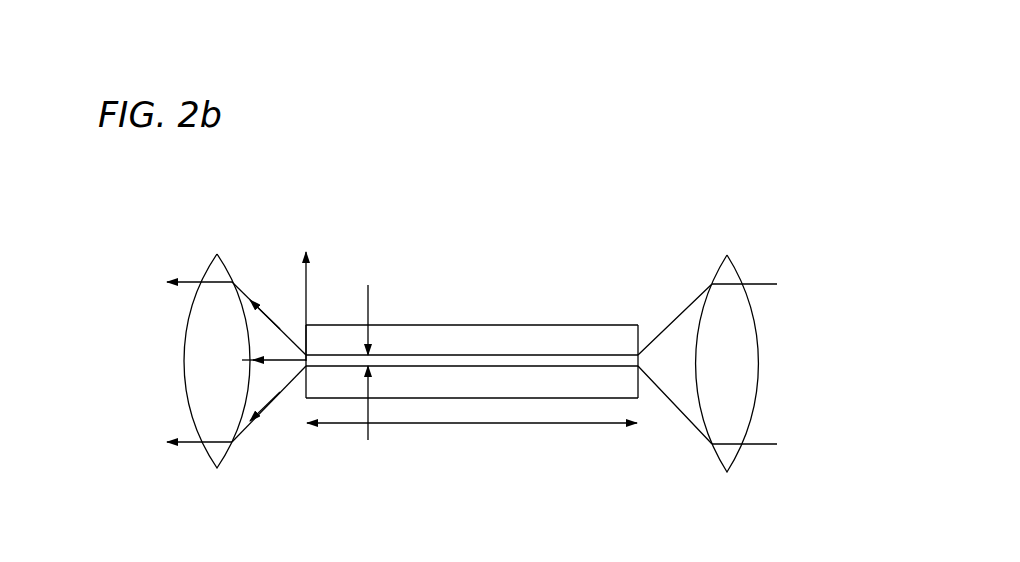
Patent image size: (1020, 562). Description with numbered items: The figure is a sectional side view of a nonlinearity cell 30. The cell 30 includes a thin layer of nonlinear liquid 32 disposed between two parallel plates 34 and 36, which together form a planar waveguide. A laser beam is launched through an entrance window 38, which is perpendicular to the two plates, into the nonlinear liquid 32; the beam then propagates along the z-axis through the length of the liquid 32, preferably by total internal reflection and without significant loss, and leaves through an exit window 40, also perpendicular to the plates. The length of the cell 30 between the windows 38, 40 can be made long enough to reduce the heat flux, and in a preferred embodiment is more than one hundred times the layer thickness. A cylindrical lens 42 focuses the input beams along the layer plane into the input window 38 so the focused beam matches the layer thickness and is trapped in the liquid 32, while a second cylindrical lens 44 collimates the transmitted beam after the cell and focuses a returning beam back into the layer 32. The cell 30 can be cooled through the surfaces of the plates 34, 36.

The nonlinearity cell 30 is at (632, 180).
The nonlinear liquid 32 is at (452, 360).
The parallel plate 34 is at (593, 340).
The parallel plate 36 is at (542, 382).
The entrance window 38 is at (640, 366).
The exit window 40 is at (306, 366).
The cylindrical lens 42 is at (728, 360).
The second cylindrical lens 44 is at (210, 385).